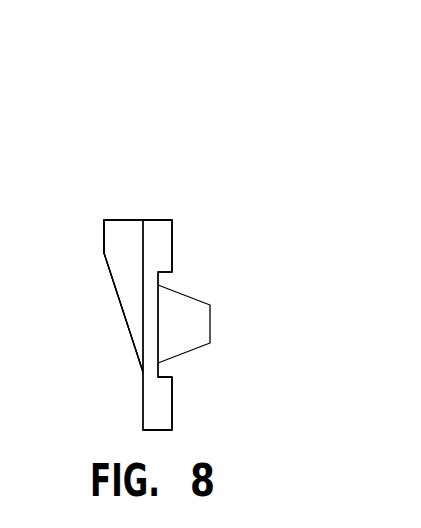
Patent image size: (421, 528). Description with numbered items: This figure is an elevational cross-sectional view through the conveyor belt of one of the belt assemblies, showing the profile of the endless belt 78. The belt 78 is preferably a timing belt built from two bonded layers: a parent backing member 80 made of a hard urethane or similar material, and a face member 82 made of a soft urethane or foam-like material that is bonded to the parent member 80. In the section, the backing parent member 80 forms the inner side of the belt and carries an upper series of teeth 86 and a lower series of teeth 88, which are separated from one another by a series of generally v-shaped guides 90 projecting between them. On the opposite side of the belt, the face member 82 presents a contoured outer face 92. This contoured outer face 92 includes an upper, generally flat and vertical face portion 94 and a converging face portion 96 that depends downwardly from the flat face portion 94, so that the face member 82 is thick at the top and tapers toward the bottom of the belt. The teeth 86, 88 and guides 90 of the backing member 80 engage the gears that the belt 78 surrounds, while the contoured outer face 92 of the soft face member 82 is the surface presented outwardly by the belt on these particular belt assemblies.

The endless belt 78 is at (152, 182).
The parent backing member 80 is at (177, 245).
The face member 82 is at (121, 229).
The upper series of teeth 86 is at (173, 228).
The lower series of teeth 88 is at (173, 400).
The v-shaped guides 90 is at (210, 318).
The contoured outer face 92 is at (113, 293).
The flat vertical face portion 94 is at (104, 236).
The converging face portion 96 is at (128, 330).